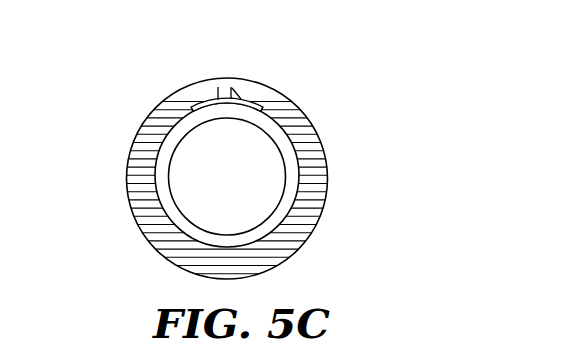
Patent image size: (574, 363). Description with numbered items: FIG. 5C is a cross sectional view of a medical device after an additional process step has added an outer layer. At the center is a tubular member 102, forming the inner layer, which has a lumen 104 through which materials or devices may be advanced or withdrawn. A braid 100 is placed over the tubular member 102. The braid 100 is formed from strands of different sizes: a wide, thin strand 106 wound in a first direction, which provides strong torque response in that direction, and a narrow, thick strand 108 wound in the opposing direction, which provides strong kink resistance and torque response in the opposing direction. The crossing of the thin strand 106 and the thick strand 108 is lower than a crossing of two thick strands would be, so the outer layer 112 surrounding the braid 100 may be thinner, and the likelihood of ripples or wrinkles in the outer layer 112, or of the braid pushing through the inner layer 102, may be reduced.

The braid 100 is at (262, 93).
The tubular member 102 is at (178, 226).
The lumen 104 is at (235, 168).
The wide, thin strand 106 is at (218, 106).
The narrow, thick strand 108 is at (223, 97).
The outer layer 112 is at (150, 160).